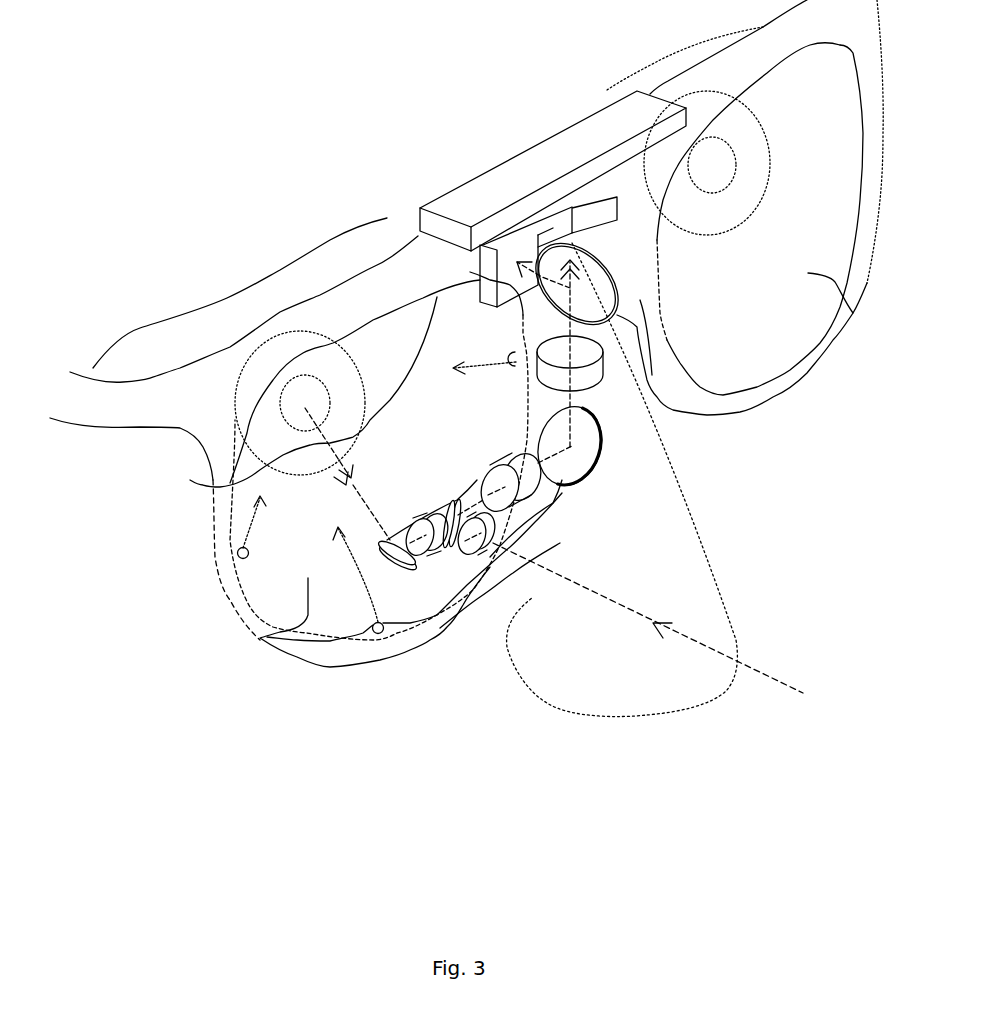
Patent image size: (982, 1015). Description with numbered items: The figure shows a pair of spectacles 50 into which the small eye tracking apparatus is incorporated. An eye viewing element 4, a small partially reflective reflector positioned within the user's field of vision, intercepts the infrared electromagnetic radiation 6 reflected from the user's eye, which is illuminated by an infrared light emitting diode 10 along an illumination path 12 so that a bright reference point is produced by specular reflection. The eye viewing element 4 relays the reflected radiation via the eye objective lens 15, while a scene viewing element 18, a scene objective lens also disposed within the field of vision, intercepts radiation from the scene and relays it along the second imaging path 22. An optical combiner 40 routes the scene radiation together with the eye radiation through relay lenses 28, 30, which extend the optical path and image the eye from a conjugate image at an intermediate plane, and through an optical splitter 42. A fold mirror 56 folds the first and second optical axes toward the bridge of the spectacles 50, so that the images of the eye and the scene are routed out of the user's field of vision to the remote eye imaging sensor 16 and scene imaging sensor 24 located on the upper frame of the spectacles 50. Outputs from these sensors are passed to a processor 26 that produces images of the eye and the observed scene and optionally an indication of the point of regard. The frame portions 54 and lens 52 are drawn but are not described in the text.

The pair of spectacles 50 is at (250, 52).
The eye imaging sensor 16 is at (597, 207).
The processor 26 is at (535, 148).
The scene imaging sensor 24 is at (478, 272).
The illumination path 12 is at (253, 532).
The infrared light emitting diode 10 is at (238, 556).
The electromagnetic radiation 6 is at (212, 482).
The optical combiner 40 is at (452, 505).
The relay lens 30 is at (495, 463).
The relay lens 28 is at (598, 386).
The optical splitter 42 is at (652, 375).
The fold mirror 56 is at (592, 462).
The scene viewing element 18 is at (497, 533).
The eye objective lens 15 is at (430, 547).
The eye viewing element 4 is at (403, 577).
The eyeglass frame 54 is at (258, 640).
The right lens 52 is at (823, 360).
The second imaging path 22 is at (765, 670).